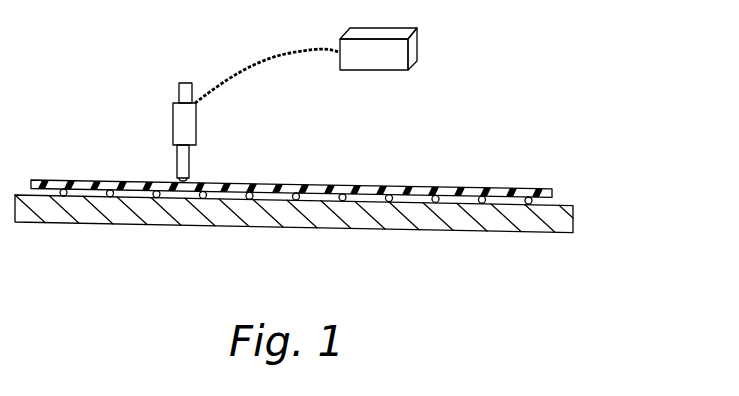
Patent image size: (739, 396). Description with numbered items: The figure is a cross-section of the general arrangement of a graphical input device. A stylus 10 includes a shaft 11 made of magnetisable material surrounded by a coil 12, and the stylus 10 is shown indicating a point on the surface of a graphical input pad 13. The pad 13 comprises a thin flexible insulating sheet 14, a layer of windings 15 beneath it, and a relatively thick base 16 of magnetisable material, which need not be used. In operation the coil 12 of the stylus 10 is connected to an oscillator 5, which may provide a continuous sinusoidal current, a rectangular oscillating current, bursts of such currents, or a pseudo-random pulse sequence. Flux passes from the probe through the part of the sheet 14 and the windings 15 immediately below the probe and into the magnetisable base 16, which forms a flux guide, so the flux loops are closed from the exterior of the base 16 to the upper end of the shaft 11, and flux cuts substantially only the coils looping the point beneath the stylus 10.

The oscillator 5 is at (418, 42).
The stylus 10 is at (199, 132).
The shaft 11 is at (177, 167).
The coil 12 is at (197, 111).
The graphical input pad 13 is at (315, 204).
The thin flexible insulating sheet 14 is at (96, 181).
The layer of windings 15 is at (62, 189).
The base of magnetisable material 16 is at (165, 229).